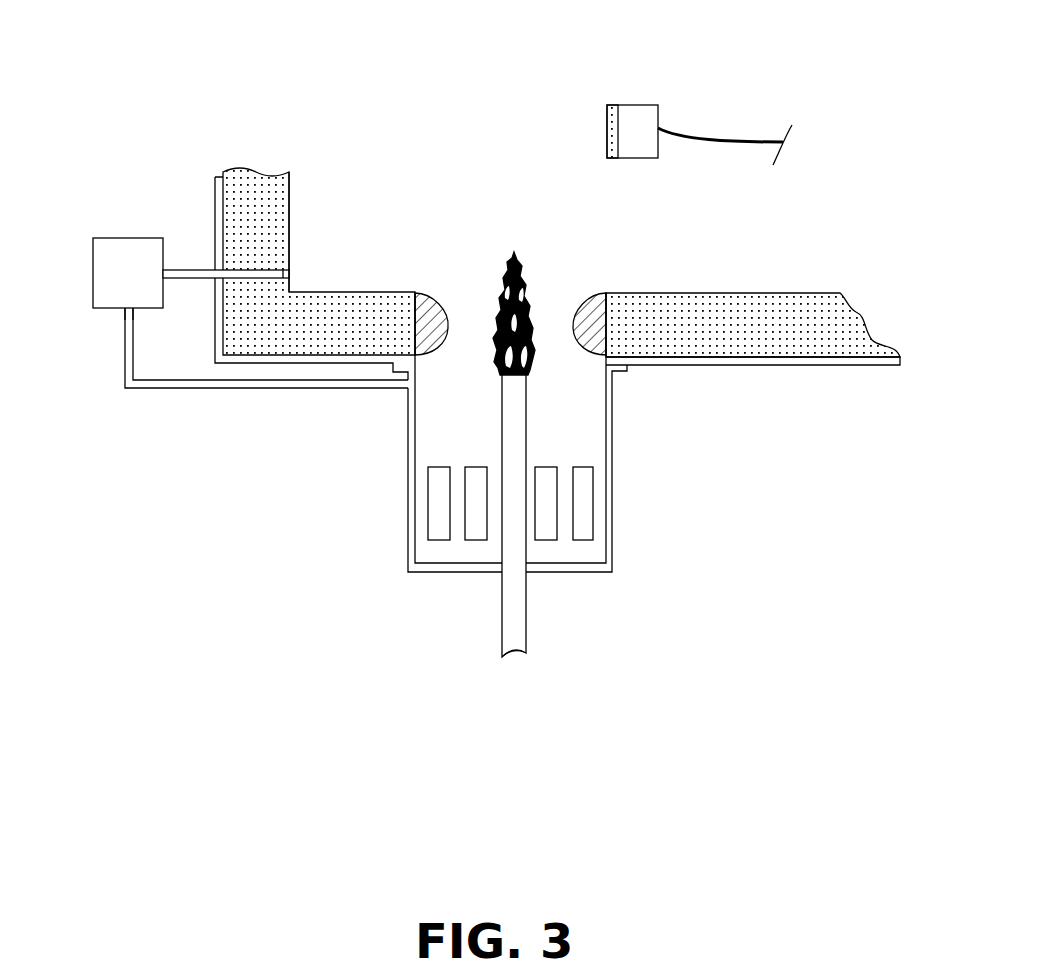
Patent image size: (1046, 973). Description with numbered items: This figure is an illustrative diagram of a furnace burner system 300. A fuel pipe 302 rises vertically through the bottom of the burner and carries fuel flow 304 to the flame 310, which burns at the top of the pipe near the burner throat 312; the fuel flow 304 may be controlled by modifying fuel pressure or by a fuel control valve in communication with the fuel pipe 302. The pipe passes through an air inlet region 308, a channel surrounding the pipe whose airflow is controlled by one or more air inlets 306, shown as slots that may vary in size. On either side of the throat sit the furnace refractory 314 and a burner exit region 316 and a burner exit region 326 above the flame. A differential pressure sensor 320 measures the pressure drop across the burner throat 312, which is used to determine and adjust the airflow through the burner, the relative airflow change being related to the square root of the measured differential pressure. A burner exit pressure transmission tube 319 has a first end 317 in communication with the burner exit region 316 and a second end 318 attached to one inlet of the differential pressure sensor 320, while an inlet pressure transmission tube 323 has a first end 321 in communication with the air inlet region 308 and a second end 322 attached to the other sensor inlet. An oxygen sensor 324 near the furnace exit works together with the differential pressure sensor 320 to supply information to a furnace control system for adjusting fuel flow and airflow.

The furnace burner system 300 is at (483, 87).
The fuel pipe 302 is at (531, 410).
The fuel flow 304 is at (515, 587).
The air inlets 306 is at (441, 513).
The air inlet region 308 is at (464, 386).
The flame 310 is at (541, 335).
The burner throat 312 is at (557, 305).
The furnace refractory 314 is at (758, 317).
The burner exit region 316 is at (418, 262).
The first end of burner exit pressure transmission tube 317 is at (295, 272).
The second end of burner exit pressure transmission tube 318 is at (170, 269).
The burner exit pressure transmission tube 319 is at (241, 271).
The differential pressure sensor 320 is at (102, 236).
The first end of inlet pressure transmission tube 321 is at (428, 393).
The second end of inlet pressure transmission tube 322 is at (142, 317).
The inlet pressure transmission tube 323 is at (258, 390).
The oxygen sensor 324 is at (631, 97).
The burner exit region 326 is at (553, 113).